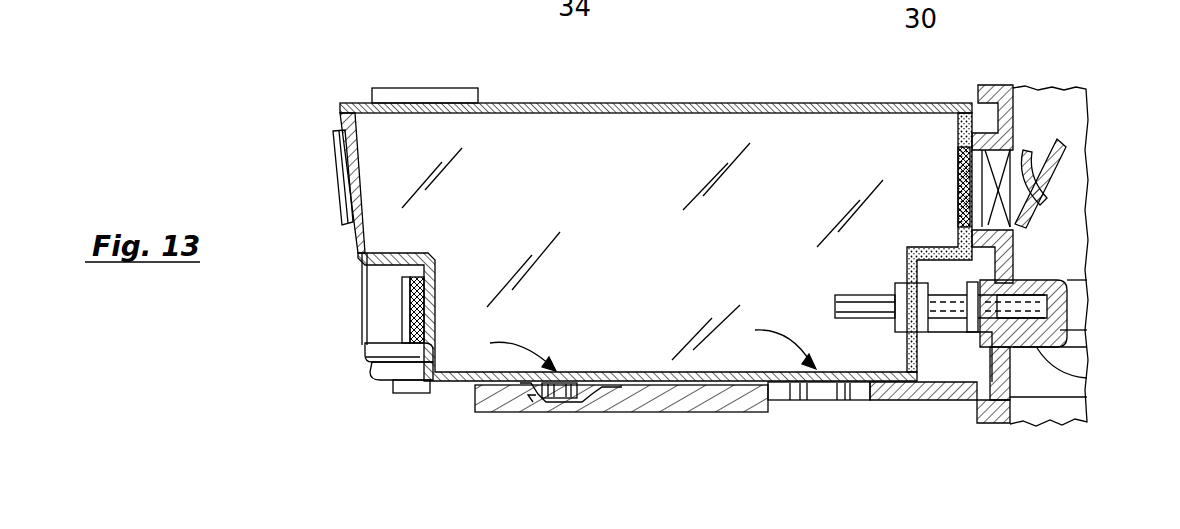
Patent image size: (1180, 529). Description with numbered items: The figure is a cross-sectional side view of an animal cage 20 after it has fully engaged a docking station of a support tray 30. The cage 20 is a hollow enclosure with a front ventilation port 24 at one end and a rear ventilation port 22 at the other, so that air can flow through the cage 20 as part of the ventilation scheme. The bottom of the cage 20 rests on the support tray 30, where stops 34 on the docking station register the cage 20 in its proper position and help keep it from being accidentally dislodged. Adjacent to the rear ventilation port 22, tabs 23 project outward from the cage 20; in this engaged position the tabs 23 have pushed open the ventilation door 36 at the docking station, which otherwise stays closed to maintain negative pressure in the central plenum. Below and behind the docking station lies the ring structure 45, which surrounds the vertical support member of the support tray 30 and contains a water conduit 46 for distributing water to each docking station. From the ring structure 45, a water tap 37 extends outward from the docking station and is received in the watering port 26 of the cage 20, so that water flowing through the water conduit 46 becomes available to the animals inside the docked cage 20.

The cage 20 is at (652, 230).
The rear ventilation port 22 is at (958, 182).
The tabs 23 is at (1010, 200).
The front ventilation port 24 is at (402, 311).
The watering port 26 is at (870, 304).
The support tray 30 is at (921, 404).
The stops 34 is at (567, 397).
The ventilation door 36 is at (1030, 196).
The water tap 37 is at (992, 346).
The ring structure 45 is at (1087, 378).
The water conduit 46 is at (485, 363).